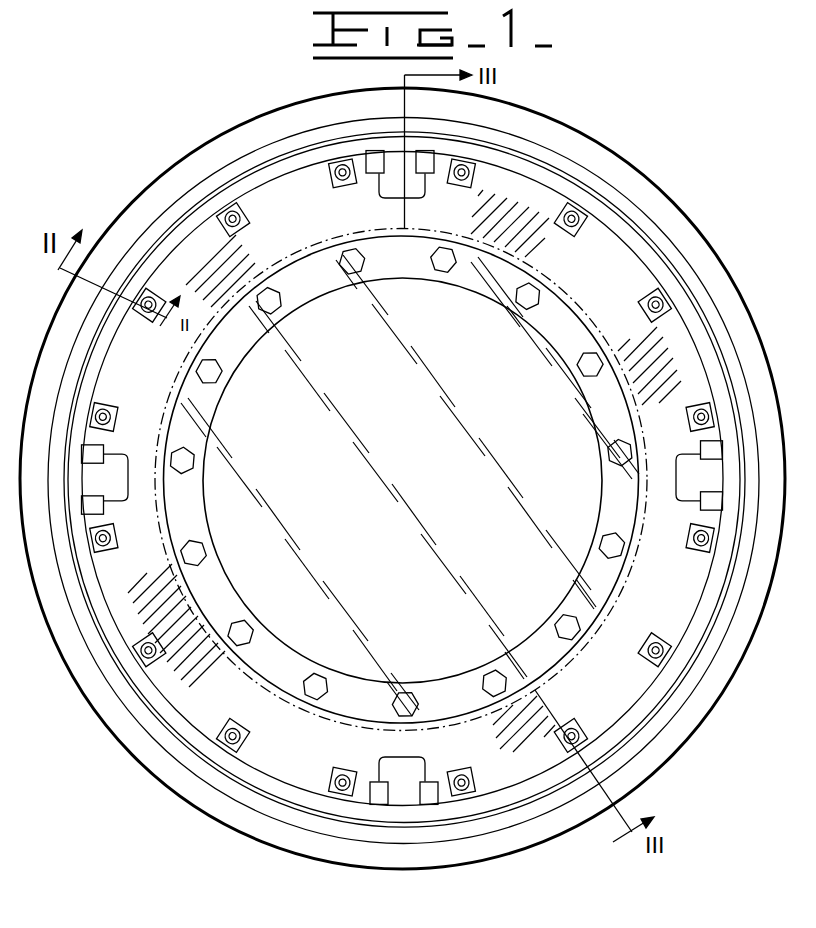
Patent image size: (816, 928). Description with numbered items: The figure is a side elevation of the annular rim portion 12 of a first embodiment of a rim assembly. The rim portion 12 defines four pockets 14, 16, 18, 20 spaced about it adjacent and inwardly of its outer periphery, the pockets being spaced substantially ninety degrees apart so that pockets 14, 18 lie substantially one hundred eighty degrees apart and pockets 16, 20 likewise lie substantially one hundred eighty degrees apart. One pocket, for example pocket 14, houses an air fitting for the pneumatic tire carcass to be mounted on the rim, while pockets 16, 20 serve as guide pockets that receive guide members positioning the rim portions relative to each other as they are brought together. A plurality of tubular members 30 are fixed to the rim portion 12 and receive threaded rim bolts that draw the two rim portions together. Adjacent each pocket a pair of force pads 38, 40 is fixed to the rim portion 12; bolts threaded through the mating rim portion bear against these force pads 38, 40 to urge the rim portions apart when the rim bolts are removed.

The rim portion 12 is at (118, 740).
The pocket 14 is at (690, 468).
The pocket 16 is at (410, 770).
The pocket 18 is at (110, 476).
The pocket 20 is at (397, 184).
The tubular member 30 is at (230, 233).
The force pad 38 is at (372, 174).
The force pad 40 is at (433, 173).